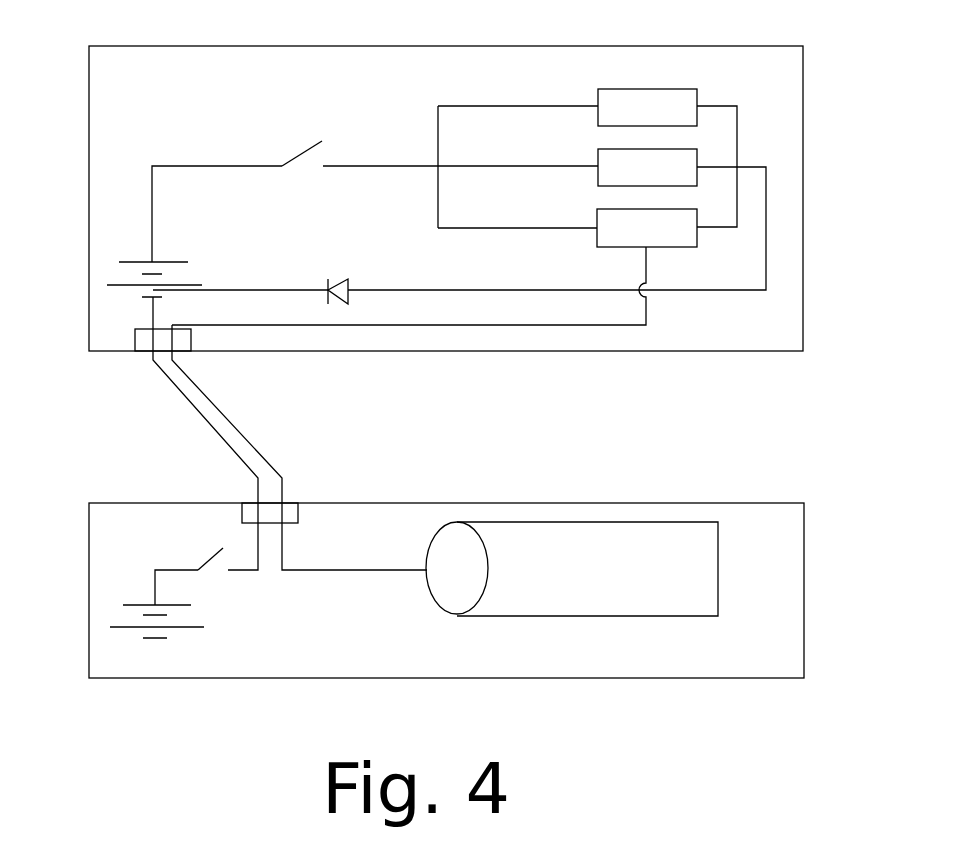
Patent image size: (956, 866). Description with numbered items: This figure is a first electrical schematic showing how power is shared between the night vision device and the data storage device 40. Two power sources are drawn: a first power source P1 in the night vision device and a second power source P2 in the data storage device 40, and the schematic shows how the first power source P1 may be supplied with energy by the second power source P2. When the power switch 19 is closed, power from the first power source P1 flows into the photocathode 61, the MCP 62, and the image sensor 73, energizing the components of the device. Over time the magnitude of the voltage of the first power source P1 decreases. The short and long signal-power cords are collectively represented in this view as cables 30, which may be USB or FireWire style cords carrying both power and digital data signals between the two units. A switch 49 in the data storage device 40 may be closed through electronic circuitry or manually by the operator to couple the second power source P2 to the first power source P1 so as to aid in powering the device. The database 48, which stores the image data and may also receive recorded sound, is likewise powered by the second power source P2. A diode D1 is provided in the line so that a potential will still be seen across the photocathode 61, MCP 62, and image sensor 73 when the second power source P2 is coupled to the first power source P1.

The power switch 19 is at (303, 148).
The photocathode 61 is at (648, 100).
The MCP 62 is at (677, 173).
The image sensor 73 is at (663, 240).
The cables 30 is at (210, 428).
The switch 49 is at (208, 560).
The data storage device 40 is at (89, 588).
The database 48 is at (653, 588).
The first power source P1 is at (128, 279).
The second power source P2 is at (128, 615).
The diode D1 is at (337, 307).